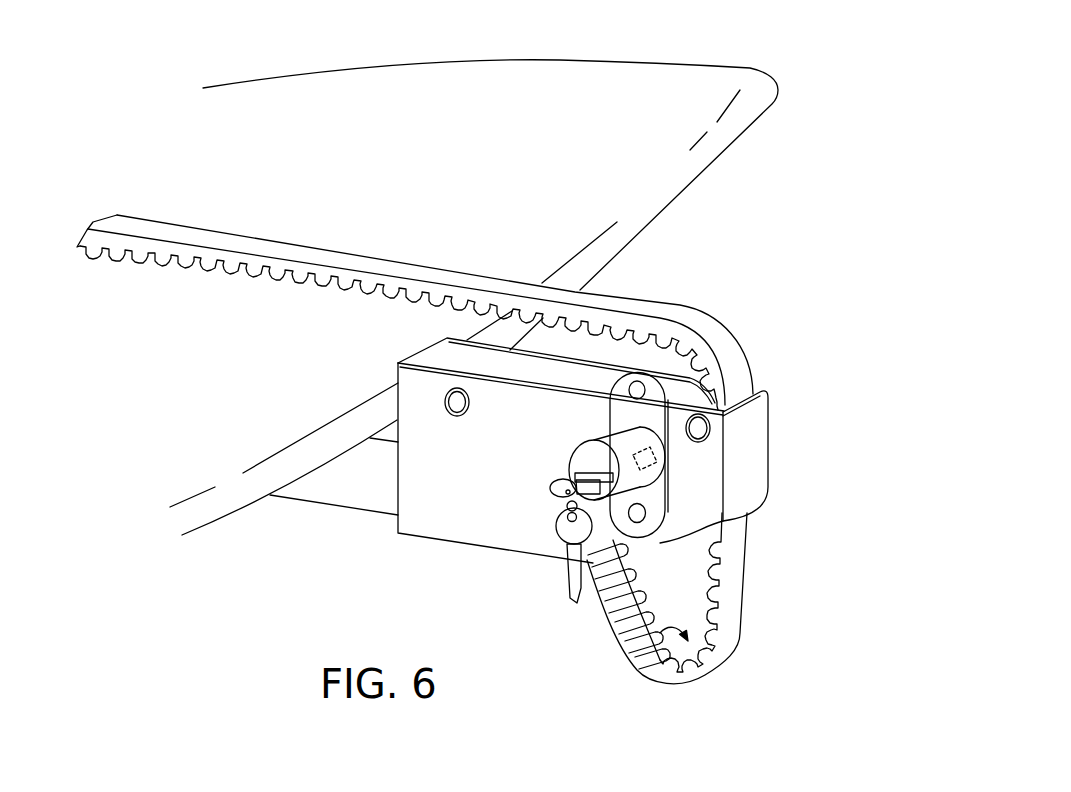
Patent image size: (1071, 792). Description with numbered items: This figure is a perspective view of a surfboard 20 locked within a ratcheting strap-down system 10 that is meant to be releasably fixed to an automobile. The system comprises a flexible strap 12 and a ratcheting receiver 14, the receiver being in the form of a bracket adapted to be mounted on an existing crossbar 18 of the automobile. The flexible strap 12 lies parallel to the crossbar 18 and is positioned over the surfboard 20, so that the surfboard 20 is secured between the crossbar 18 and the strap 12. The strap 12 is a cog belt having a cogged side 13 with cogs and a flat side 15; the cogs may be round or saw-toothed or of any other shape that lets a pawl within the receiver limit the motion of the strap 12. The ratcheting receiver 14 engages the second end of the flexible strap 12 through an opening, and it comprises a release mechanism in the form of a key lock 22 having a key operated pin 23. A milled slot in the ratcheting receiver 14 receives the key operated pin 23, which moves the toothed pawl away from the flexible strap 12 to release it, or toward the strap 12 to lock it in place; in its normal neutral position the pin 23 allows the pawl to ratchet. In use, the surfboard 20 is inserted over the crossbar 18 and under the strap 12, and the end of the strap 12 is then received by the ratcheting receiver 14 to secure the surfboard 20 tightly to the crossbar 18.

The ratcheting strap-down system 10 is at (821, 360).
The flexible strap 12 is at (737, 613).
The cogged side 13 is at (660, 634).
The ratcheting receiver 14 is at (770, 458).
The flat side 15 is at (730, 350).
The crossbar 18 is at (343, 490).
The surfboard 20 is at (723, 80).
The key lock 22 is at (638, 473).
The key operated pin 23 is at (647, 460).